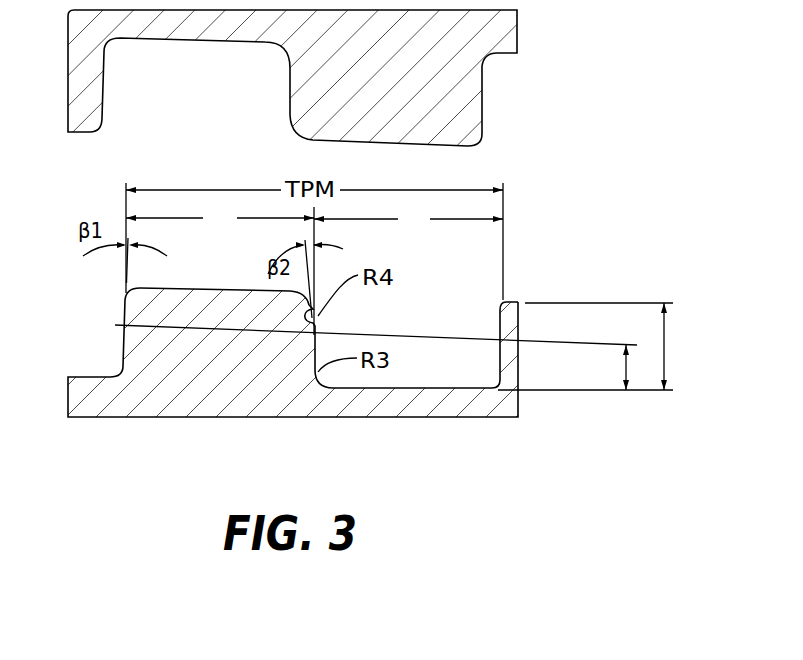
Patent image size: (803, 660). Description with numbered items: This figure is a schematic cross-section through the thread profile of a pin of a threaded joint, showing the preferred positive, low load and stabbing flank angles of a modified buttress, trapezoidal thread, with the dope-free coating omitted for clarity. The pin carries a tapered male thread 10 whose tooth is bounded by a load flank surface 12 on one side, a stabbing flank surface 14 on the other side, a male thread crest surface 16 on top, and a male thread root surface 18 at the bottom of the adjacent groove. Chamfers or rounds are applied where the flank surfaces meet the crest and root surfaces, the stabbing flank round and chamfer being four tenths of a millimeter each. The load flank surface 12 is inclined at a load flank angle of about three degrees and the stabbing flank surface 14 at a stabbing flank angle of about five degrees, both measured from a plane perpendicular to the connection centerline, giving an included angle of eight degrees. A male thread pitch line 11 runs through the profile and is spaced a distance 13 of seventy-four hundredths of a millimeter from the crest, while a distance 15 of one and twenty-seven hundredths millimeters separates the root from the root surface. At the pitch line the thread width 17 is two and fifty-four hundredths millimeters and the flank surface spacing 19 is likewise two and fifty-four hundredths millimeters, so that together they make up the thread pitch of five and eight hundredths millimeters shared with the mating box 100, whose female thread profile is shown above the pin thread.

The tapered male thread 10 is at (170, 398).
The male thread pitch line 11 is at (441, 336).
The load flank surface 12 is at (117, 326).
The distance from crest to pitch line 13 is at (626, 372).
The stabbing flank surface 14 is at (316, 350).
The distance between root and root surface 15 is at (666, 358).
The male thread crest surface 16 is at (193, 280).
The thread width 17 is at (220, 238).
The male thread root surface 18 is at (400, 387).
The flank surface spacing 19 is at (408, 259).
The box 100 is at (332, 330).